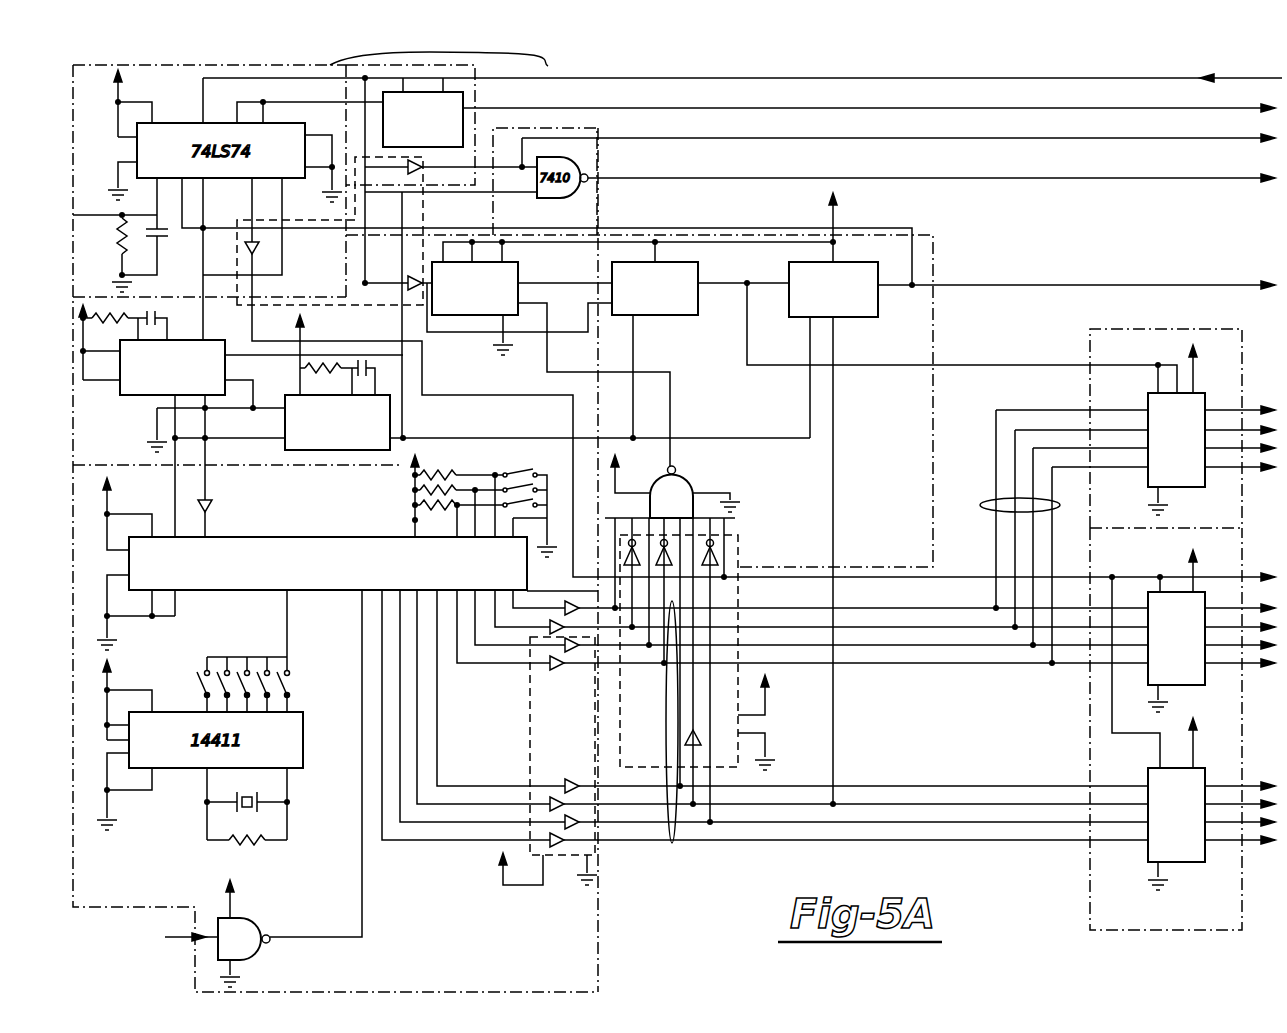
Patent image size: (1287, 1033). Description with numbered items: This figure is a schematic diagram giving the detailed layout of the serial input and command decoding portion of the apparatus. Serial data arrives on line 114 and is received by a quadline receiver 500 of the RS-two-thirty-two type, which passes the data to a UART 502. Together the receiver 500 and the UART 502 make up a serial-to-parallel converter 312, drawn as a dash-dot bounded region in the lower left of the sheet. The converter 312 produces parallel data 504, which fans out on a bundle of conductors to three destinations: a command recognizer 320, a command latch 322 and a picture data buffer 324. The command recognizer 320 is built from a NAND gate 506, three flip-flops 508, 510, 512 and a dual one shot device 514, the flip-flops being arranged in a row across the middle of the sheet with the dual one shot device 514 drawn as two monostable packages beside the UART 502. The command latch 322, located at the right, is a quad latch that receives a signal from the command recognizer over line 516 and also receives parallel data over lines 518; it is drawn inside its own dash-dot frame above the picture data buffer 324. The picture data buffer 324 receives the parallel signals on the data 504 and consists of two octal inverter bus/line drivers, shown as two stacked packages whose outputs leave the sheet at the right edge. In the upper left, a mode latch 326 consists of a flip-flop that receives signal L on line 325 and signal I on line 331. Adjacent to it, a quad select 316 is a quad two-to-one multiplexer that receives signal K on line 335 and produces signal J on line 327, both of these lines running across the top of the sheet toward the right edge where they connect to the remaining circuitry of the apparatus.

The line 114 is at (172, 940).
The serial-to-parallel converter 312 is at (603, 945).
The quad select 316 is at (470, 80).
The command recognizer 320 is at (770, 567).
The command latch 322 is at (1090, 329).
The picture data buffer 324 is at (1090, 740).
The line 325 is at (284, 238).
The mode latch 326 is at (460, 66).
The line 327 is at (725, 108).
The line 331 is at (97, 217).
The line 335 is at (700, 78).
The RS-232 quadline receiver 500 is at (258, 918).
The UART 502 is at (290, 537).
The parallel data 504 is at (672, 845).
The NAND gate 506 is at (690, 478).
The flip-flop 508 is at (522, 268).
The flip-flop 510 is at (702, 268).
The flip-flop 512 is at (850, 325).
The dual one shot device 514 is at (217, 397).
The line 516 is at (952, 367).
The lines 518 is at (985, 505).